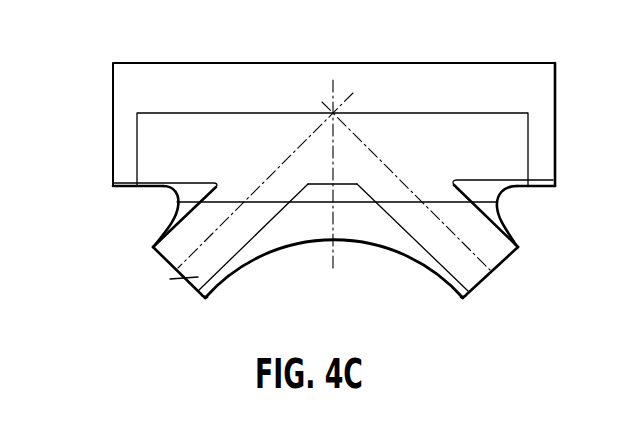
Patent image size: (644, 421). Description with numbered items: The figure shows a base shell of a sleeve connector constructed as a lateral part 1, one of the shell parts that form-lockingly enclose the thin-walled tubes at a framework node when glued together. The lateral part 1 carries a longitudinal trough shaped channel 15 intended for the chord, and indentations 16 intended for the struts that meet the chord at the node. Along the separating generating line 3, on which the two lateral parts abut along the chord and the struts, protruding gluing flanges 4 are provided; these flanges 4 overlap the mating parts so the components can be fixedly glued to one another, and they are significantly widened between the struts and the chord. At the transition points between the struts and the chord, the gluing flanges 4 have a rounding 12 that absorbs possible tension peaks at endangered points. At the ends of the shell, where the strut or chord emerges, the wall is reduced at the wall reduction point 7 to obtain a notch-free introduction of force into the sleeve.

The lateral part 1 is at (356, 178).
The generating line 3 is at (157, 62).
The gluing flange 4 is at (498, 209).
The wall reduction point 7 is at (122, 152).
The rounding 12 is at (172, 200).
The longitudinal trough shaped channel 15 is at (568, 76).
The indentation 16 is at (155, 266).